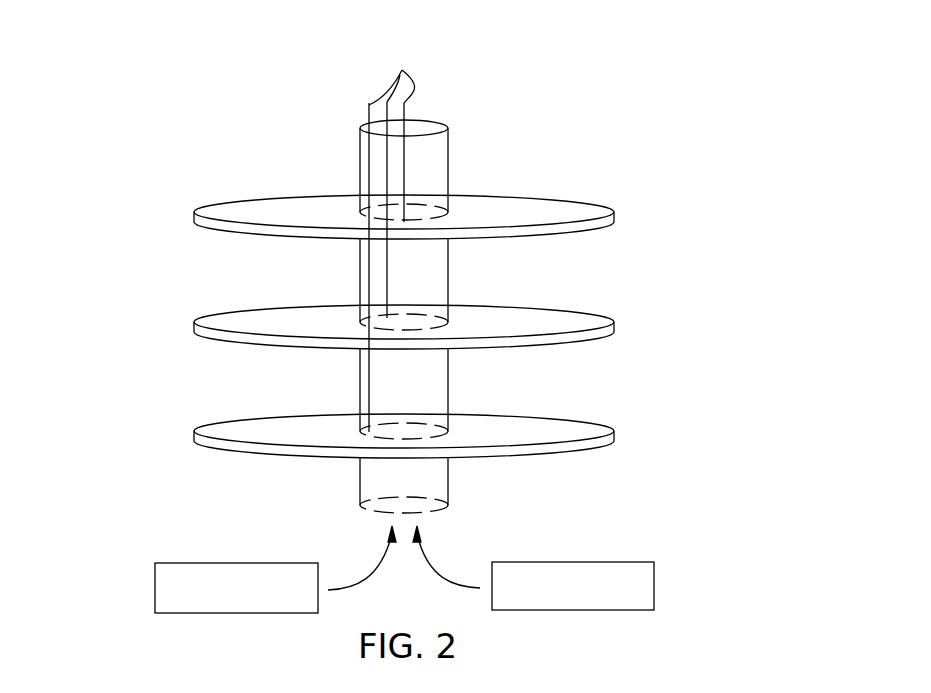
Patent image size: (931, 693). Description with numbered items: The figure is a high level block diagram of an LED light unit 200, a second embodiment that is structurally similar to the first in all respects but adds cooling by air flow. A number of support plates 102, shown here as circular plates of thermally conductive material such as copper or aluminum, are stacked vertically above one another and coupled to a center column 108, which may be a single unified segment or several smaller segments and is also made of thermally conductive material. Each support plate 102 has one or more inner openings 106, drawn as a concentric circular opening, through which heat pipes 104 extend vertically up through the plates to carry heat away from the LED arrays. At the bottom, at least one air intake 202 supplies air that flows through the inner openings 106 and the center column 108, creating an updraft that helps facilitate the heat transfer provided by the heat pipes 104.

The LED light unit 200 is at (593, 37).
The support plate 102 is at (237, 434).
The heat pipe 104 is at (402, 70).
The inner opening 106 is at (443, 317).
The center column 108 is at (360, 280).
The air intake 202 is at (265, 562).